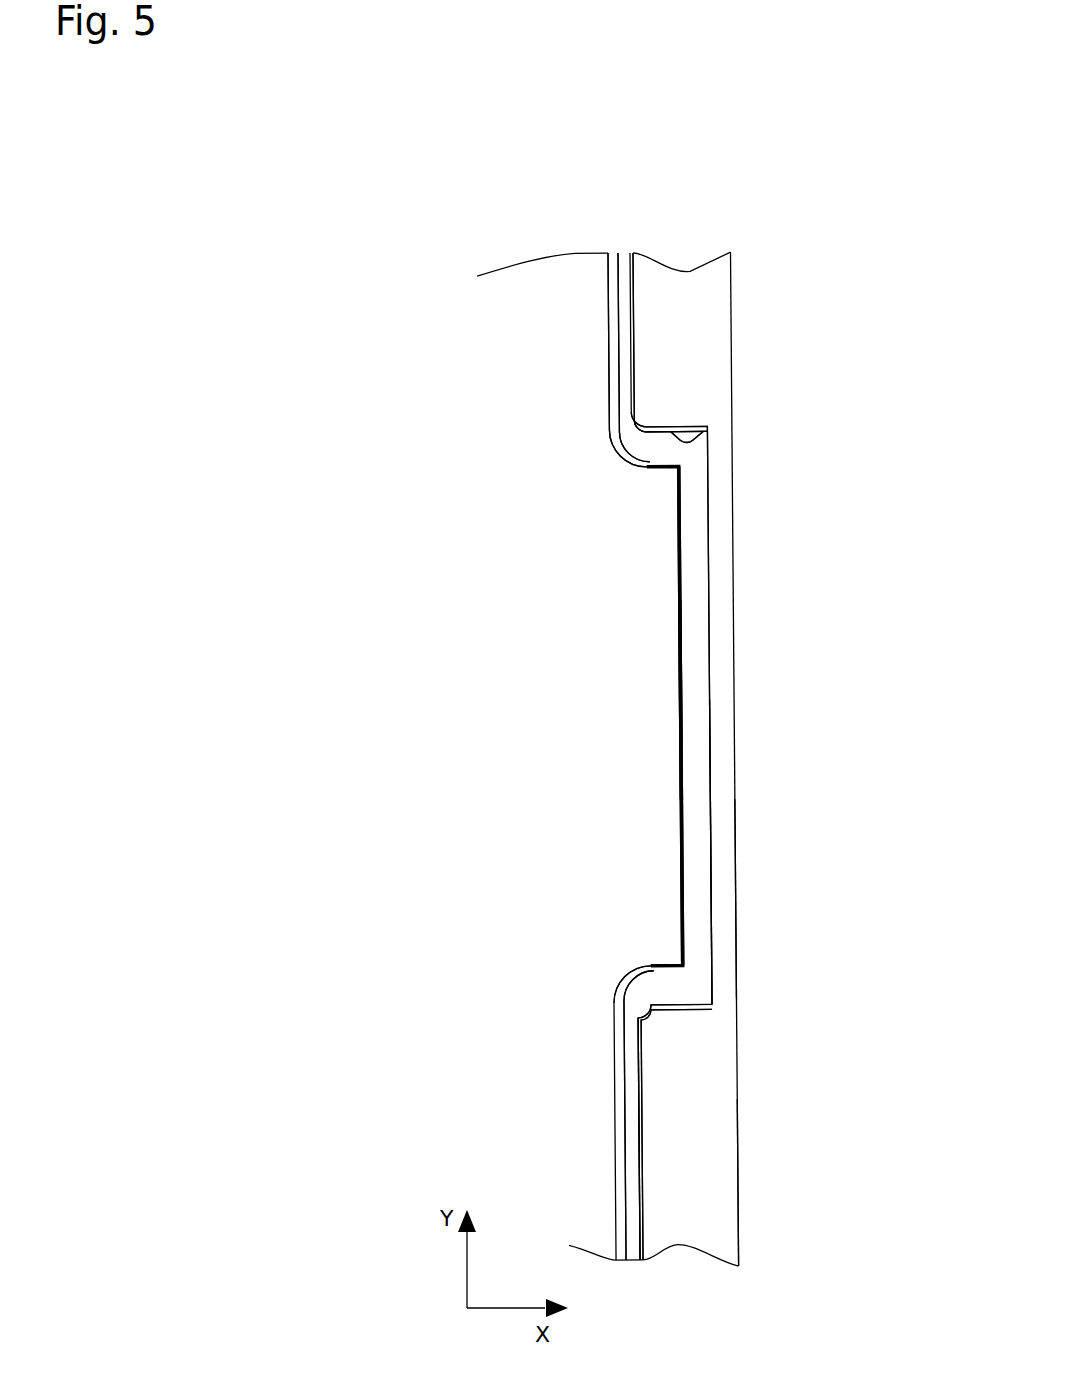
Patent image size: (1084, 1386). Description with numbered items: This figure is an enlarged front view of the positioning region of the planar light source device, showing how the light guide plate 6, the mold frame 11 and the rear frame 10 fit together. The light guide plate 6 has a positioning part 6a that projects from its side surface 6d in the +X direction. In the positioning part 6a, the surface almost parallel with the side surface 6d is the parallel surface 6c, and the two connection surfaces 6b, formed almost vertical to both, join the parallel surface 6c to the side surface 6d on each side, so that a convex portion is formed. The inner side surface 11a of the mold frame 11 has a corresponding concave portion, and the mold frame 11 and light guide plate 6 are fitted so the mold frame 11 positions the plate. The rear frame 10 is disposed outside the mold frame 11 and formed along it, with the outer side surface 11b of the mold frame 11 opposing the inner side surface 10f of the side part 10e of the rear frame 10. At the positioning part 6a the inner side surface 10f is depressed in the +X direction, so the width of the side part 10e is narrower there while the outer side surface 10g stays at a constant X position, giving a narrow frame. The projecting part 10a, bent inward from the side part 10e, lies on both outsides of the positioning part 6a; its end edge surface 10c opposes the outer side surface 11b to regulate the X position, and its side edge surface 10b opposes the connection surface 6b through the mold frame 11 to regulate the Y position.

The light guide plate 6 is at (641, 552).
The positioning part 6a is at (646, 738).
The connection surface 6b is at (644, 467).
The parallel surface 6c is at (679, 587).
The side surface 6d is at (610, 318).
The rear frame 10 is at (719, 650).
The projecting part 10a is at (672, 1197).
The side edge surface 10b is at (696, 425).
The end edge surface 10c is at (634, 1185).
The side part 10e is at (694, 1237).
The inner side surface 10f is at (706, 782).
The outer side surface 10g is at (732, 924).
The mold frame 11 is at (695, 493).
The inner side surface 11a is at (618, 1098).
The outer side surface 11b is at (707, 878).